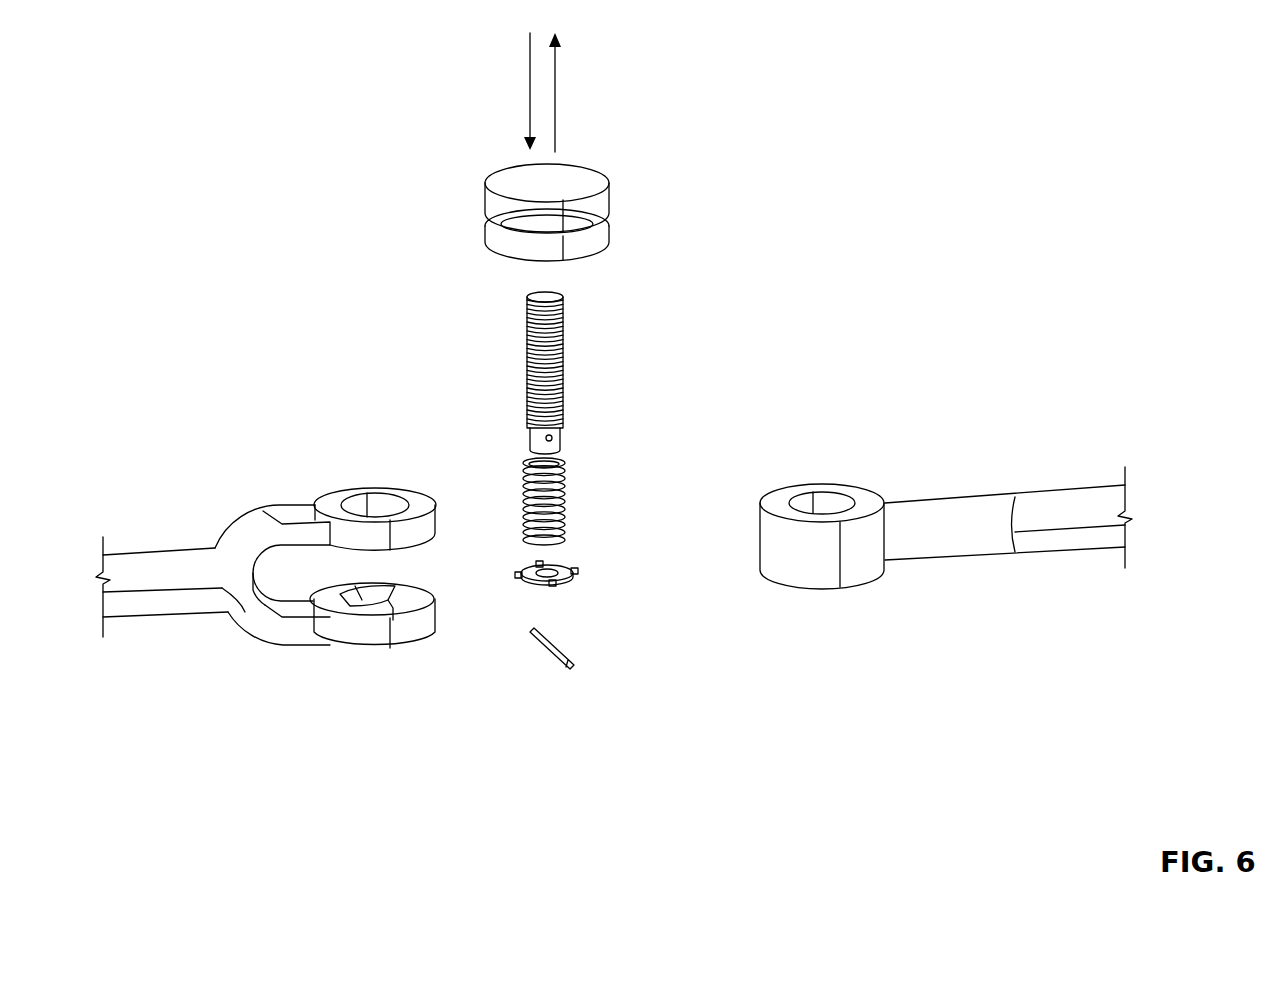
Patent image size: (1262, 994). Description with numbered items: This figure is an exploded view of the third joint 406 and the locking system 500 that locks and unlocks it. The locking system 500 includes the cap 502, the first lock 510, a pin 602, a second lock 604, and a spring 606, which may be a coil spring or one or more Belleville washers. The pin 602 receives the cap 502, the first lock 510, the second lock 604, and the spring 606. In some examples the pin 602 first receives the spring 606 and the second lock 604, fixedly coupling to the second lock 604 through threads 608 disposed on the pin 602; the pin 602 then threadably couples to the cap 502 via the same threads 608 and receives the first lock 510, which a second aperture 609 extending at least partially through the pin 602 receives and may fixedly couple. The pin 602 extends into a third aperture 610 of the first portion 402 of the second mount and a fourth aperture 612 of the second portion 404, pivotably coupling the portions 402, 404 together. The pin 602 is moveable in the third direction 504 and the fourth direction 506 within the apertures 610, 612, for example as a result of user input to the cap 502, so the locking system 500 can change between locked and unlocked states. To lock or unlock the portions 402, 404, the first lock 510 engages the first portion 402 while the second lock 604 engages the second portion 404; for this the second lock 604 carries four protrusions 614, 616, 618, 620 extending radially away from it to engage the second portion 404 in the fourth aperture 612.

The first portion 402 is at (118, 553).
The second portion 404 is at (1070, 487).
The third joint 406 is at (294, 158).
The locking system 500 is at (682, 216).
The cap 502 is at (505, 258).
The third direction 504 is at (557, 92).
The fourth direction 506 is at (530, 83).
The first lock 510 is at (568, 668).
The pin 602 is at (556, 357).
The second lock 604 is at (584, 590).
The spring 606 is at (563, 470).
The threads 608 is at (525, 372).
The second aperture 609 is at (562, 438).
The third aperture 610 is at (377, 486).
The fourth aperture 612 is at (832, 500).
The protrusion 614 is at (513, 576).
The protrusion 616 is at (540, 565).
The protrusion 618 is at (565, 568).
The protrusion 620 is at (553, 585).